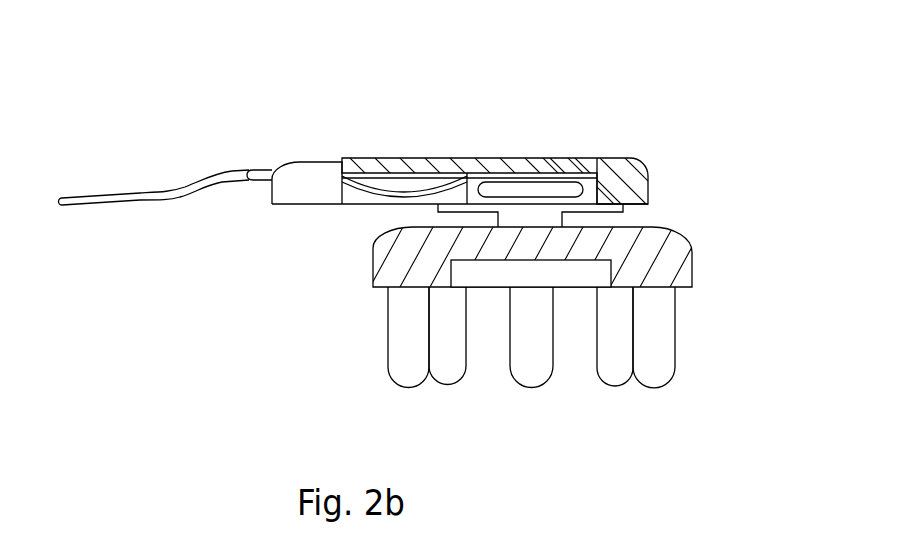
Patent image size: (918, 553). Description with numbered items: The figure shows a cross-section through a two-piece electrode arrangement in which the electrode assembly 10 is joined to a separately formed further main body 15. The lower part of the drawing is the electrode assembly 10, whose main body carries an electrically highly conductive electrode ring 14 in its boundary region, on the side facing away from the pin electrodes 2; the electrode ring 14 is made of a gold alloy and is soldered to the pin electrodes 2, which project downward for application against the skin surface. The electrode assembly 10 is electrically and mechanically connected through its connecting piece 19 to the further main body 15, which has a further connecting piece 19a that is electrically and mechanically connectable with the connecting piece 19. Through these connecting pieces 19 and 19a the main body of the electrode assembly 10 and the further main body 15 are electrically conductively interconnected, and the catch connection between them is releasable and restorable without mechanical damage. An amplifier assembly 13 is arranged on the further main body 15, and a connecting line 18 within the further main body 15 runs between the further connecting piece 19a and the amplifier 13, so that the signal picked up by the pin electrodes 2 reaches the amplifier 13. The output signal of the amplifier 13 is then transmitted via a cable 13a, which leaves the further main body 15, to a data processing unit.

The pin electrodes 2 is at (447, 359).
The electrode assembly 10 is at (414, 252).
The amplifier assembly 13 is at (303, 182).
The cable 13a is at (118, 192).
The electrode ring 14 is at (652, 252).
The further main body 15 is at (500, 133).
The connecting line 18 is at (368, 190).
The connecting piece 19 is at (558, 192).
The further connecting piece 19a is at (553, 175).